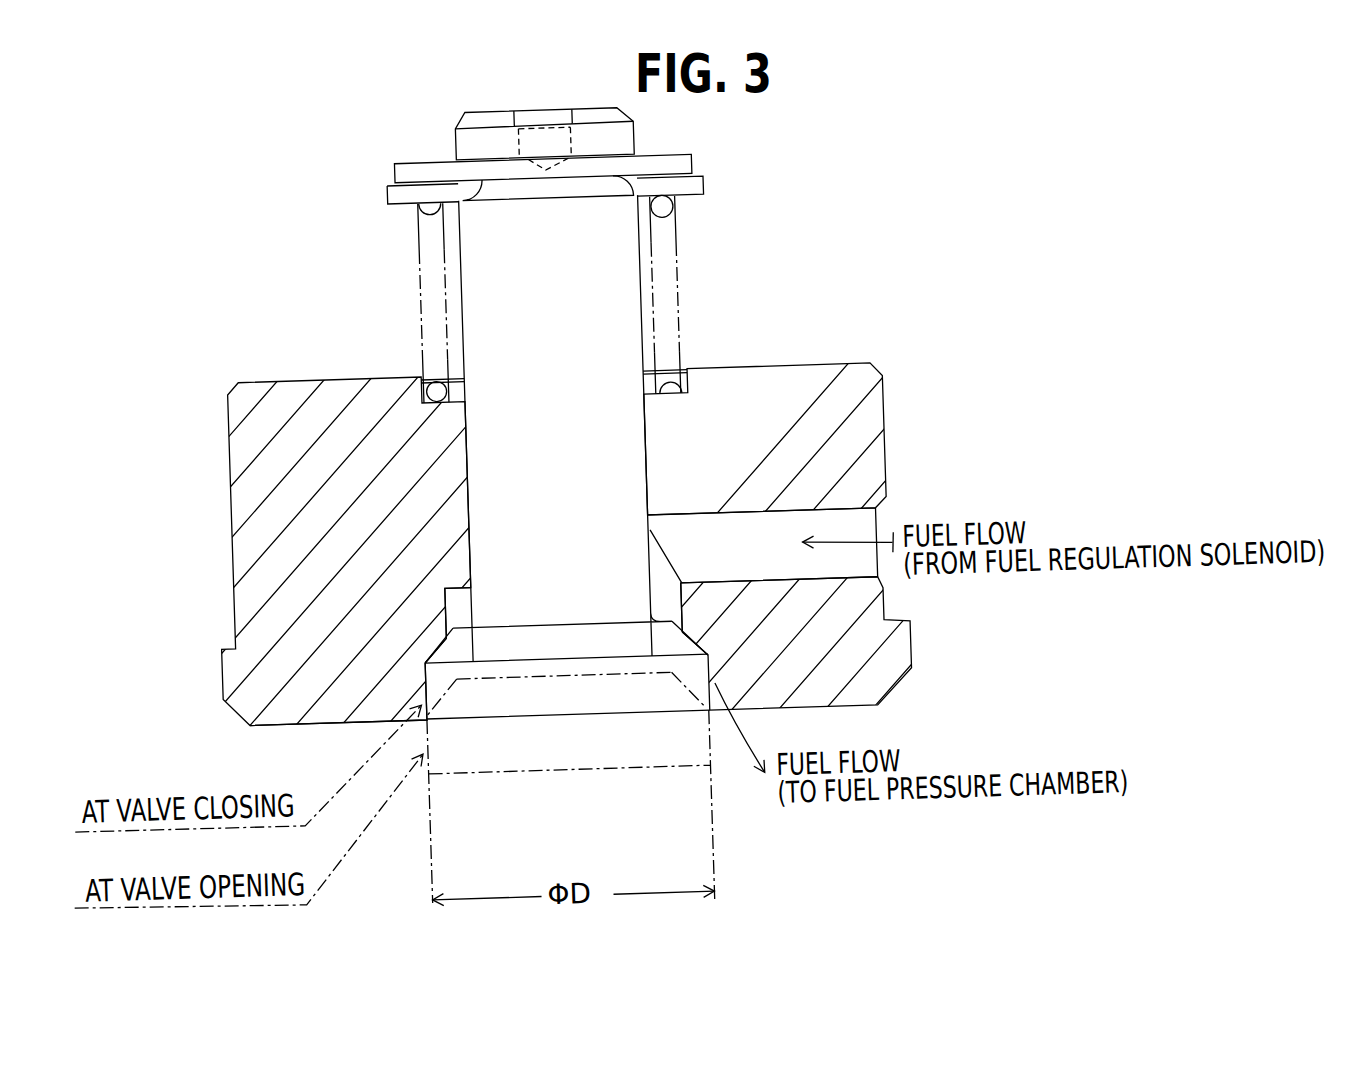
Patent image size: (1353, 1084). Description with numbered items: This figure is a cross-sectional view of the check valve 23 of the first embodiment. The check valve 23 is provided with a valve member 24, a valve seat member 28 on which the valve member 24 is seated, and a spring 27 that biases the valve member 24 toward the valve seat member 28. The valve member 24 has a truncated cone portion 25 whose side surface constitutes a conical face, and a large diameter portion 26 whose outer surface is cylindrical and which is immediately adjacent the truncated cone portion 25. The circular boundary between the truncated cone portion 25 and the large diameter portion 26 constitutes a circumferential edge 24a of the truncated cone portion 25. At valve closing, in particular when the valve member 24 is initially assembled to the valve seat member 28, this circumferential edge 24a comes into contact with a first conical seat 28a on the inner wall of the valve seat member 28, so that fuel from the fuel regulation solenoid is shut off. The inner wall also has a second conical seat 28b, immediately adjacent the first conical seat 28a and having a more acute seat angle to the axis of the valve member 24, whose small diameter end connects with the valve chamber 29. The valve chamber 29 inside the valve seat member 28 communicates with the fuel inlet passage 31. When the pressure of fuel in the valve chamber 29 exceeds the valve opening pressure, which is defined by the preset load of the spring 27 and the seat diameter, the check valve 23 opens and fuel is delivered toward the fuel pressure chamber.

The check valve 23 is at (706, 327).
The valve member 24 is at (638, 470).
The circumferential edge 24a is at (709, 664).
The truncated cone portion 25 is at (691, 638).
The large diameter portion 26 is at (718, 699).
The spring 27 is at (443, 250).
The valve seat member 28 is at (393, 389).
The first conical seat 28a is at (425, 718).
The second conical seat 28b is at (448, 639).
The valve chamber 29 is at (462, 589).
The fuel inlet passage 31 is at (806, 534).